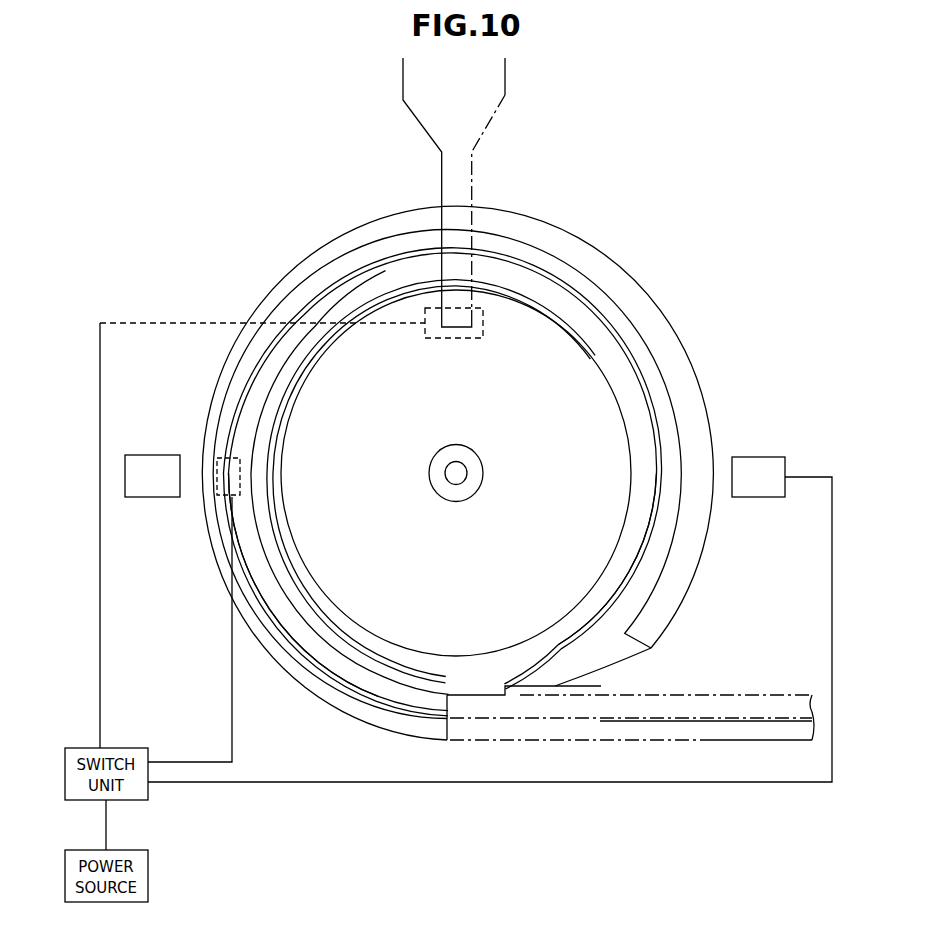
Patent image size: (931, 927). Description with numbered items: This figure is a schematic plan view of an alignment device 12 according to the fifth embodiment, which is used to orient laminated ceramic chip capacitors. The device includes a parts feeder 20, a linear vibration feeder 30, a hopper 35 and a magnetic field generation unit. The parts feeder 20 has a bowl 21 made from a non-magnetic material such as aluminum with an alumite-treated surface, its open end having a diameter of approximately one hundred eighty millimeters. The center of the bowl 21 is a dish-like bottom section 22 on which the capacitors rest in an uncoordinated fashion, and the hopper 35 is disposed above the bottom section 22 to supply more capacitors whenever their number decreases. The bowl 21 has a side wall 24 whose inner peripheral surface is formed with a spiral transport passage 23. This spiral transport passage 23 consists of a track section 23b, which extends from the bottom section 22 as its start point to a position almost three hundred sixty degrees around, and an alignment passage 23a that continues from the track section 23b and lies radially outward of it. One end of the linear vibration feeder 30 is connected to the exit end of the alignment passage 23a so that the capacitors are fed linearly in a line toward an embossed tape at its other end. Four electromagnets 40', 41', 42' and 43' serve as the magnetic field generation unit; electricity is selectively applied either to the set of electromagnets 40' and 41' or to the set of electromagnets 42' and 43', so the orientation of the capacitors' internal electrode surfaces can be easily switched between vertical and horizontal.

The coin handling apparatus 12 is at (758, 160).
The parts feeder 20 is at (618, 250).
The bowl 21 is at (678, 350).
The bottom section 22 is at (575, 580).
The spiral transport passage 23 is at (520, 262).
The alignment passage 23a is at (230, 520).
The track section 23b is at (660, 520).
The side wall 24 is at (640, 310).
The linear vibration feeder 30 is at (625, 742).
The hopper 35 is at (508, 100).
The electromagnet 40' is at (149, 451).
The electromagnet 41' is at (758, 453).
The electromagnet 42' is at (194, 496).
The electromagnet 43' is at (321, 337).